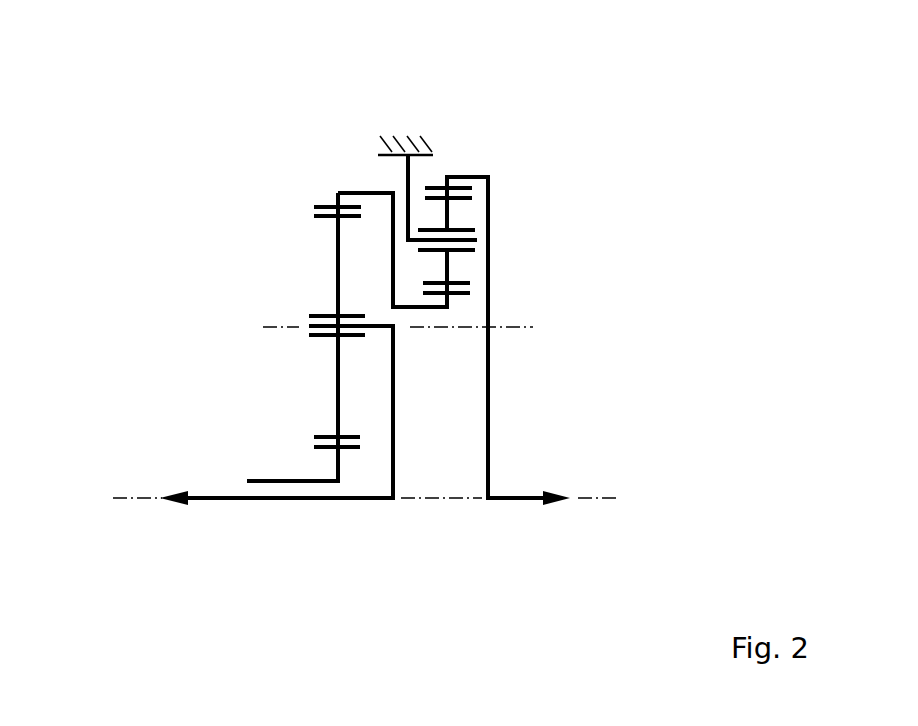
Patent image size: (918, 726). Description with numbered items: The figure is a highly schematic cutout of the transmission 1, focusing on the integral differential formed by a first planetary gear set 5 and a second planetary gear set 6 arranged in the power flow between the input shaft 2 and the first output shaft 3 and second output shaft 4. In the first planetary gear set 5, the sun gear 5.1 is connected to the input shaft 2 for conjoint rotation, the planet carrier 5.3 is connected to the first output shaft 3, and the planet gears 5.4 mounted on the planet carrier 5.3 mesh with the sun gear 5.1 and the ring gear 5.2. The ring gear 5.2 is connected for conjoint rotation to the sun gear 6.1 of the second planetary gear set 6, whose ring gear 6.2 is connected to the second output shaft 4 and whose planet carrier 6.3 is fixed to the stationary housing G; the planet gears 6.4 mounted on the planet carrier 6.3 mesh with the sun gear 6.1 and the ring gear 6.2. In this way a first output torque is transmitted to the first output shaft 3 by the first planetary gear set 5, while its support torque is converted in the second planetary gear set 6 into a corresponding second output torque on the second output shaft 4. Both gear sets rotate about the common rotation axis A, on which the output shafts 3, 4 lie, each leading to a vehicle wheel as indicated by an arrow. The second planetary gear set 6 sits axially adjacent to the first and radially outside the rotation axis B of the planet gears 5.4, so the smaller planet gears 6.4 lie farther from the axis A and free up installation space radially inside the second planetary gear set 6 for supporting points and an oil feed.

The transmission 1 is at (537, 140).
The input shaft 2 is at (273, 481).
The first output shaft 3 is at (218, 498).
The second output shaft 4 is at (515, 498).
The first planetary gear set 5 is at (338, 518).
The sun gear 5.1 is at (335, 468).
The ring gear 5.2 is at (338, 194).
The planet carrier 5.3 is at (309, 325).
The planet gears 5.4 is at (335, 402).
The second planetary gear set 6 is at (448, 345).
The sun gear 6.1 is at (448, 303).
The ring gear 6.2 is at (440, 177).
The planet carrier 6.3 is at (477, 238).
The planet gears 6.4 is at (448, 265).
The common rotation axis A is at (580, 498).
The rotation axis B is at (522, 327).
The housing G is at (402, 147).